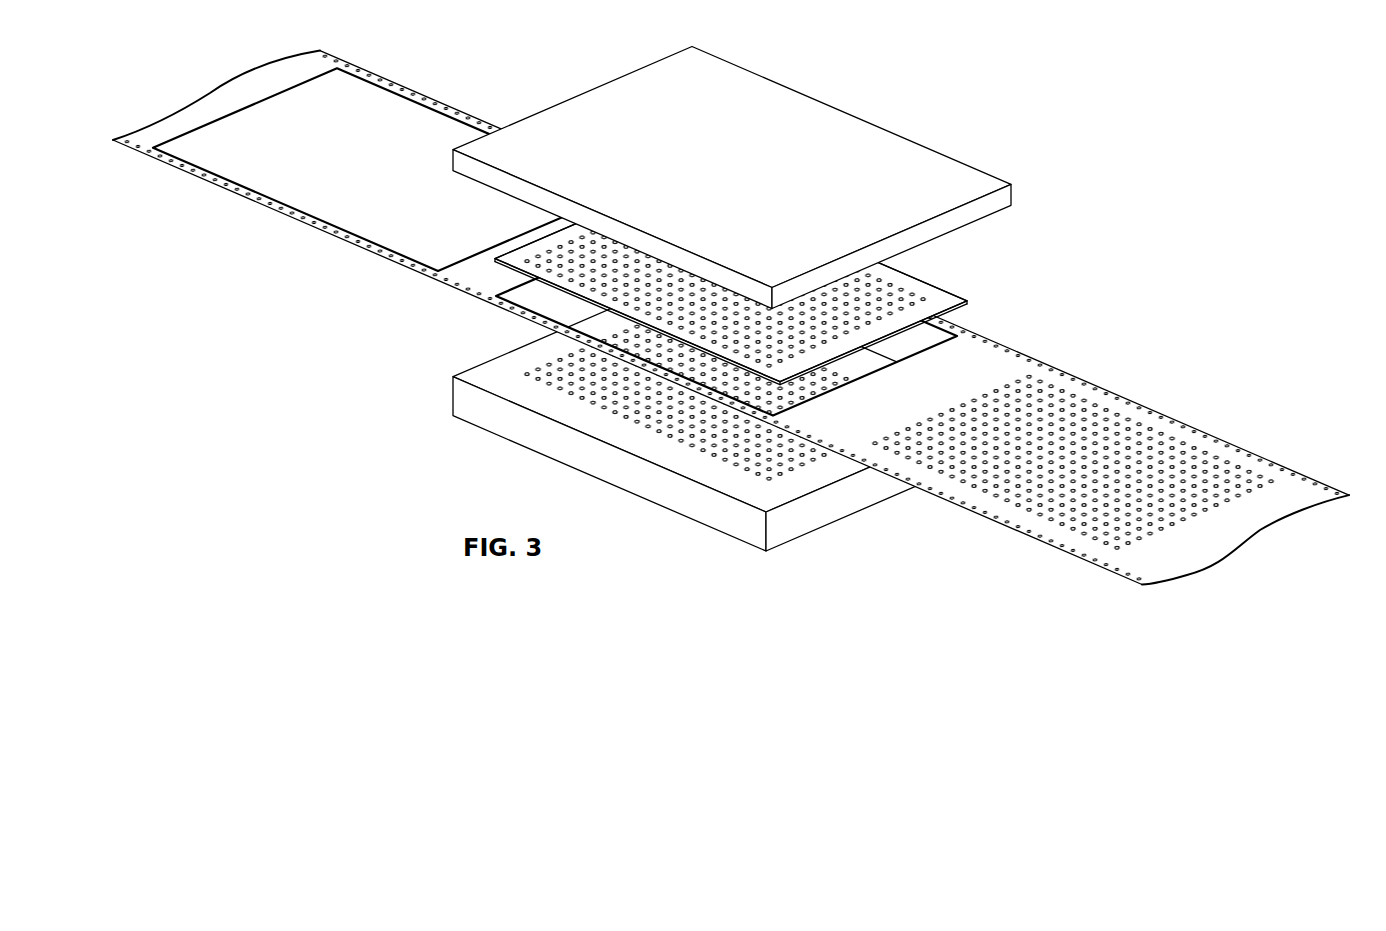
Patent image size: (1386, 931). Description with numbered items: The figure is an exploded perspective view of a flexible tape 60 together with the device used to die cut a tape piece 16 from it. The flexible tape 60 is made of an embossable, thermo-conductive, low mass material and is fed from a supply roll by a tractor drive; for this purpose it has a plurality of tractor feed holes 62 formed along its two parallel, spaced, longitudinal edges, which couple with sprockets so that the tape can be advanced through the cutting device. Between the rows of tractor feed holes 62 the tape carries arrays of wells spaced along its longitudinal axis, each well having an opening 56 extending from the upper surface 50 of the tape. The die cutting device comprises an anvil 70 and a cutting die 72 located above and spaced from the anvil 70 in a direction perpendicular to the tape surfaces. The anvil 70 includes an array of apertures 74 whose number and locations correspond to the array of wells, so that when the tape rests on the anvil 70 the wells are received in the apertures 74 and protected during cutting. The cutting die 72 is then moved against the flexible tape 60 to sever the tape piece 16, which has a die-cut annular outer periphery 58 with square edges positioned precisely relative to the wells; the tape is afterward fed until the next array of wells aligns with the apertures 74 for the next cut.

The tape piece 16 is at (746, 316).
The upper surface 50 is at (765, 281).
The opening 56 is at (892, 289).
The annular outer periphery 58 is at (945, 290).
The flexible tape 60 is at (746, 318).
The tractor feed holes 62 is at (1178, 427).
The anvil 70 is at (729, 419).
The cutting die 72 is at (863, 151).
The array of apertures 74 is at (790, 470).